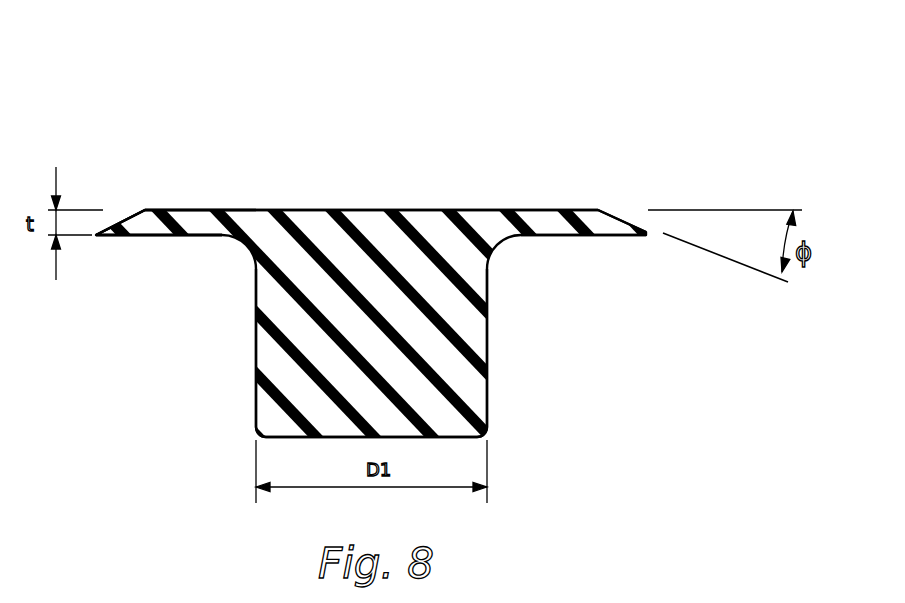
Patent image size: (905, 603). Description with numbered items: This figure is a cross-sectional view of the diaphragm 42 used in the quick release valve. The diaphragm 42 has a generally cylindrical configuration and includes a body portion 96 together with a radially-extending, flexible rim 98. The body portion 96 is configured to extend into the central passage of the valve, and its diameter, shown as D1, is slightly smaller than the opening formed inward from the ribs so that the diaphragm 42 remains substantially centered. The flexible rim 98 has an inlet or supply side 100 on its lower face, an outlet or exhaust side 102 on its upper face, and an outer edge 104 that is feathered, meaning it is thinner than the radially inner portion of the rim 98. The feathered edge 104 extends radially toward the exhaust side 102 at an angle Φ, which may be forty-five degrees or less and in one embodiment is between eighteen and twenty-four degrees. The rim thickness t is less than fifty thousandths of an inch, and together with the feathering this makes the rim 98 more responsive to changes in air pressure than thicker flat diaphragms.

The diaphragm 42 is at (510, 140).
The body portion 96 is at (470, 385).
The flexible rim 98 is at (137, 227).
The supply side 100 is at (160, 238).
The exhaust side 102 is at (358, 208).
The feathered edge 104 is at (121, 221).